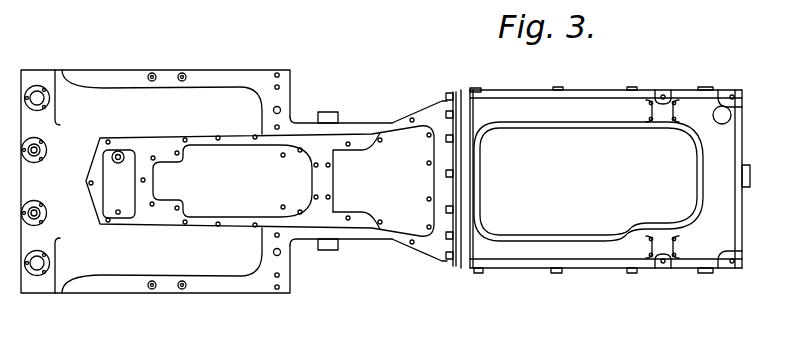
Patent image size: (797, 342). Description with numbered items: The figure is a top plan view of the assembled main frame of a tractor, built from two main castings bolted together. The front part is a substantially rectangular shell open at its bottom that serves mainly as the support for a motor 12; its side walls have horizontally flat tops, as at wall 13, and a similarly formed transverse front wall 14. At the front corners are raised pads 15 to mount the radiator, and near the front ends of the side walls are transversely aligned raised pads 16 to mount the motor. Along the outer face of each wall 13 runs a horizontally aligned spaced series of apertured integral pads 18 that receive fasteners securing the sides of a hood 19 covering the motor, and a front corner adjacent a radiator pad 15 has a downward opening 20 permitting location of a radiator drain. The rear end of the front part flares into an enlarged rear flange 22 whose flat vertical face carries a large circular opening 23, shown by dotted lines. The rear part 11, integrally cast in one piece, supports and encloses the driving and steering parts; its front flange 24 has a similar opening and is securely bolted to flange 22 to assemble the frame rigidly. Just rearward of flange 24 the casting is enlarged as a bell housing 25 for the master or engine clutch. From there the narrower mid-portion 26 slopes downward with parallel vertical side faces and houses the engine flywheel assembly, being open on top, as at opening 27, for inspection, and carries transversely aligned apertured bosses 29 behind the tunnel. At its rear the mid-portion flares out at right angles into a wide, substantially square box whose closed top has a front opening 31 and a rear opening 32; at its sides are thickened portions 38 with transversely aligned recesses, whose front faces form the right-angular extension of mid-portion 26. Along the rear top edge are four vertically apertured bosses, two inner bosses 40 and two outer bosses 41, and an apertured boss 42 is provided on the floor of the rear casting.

The rear part 11 is at (230, 70).
The motor 12 is at (121, 156).
The wall 13 is at (602, 266).
The transverse front wall 14 is at (740, 222).
The raised pad 15 is at (585, 97).
The pad 16 is at (662, 92).
The integral pad 18 is at (478, 274).
The hood 19 is at (749, 172).
The downward opening 20 is at (517, 84).
The rear flange 22 is at (466, 270).
The circular opening 23 is at (461, 102).
The flange 24 is at (455, 270).
The bell housing 25 is at (438, 112).
The mid-portion 26 is at (362, 240).
The top opening 27 is at (404, 136).
The apertured boss 29 is at (360, 102).
The front opening 31 is at (258, 217).
The rear opening 32 is at (115, 219).
The thickened portion 38 is at (267, 293).
The inner boss 40 is at (62, 153).
The outer boss 41 is at (62, 99).
The apertured boss 42 is at (134, 137).